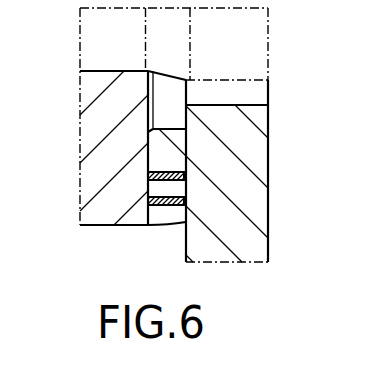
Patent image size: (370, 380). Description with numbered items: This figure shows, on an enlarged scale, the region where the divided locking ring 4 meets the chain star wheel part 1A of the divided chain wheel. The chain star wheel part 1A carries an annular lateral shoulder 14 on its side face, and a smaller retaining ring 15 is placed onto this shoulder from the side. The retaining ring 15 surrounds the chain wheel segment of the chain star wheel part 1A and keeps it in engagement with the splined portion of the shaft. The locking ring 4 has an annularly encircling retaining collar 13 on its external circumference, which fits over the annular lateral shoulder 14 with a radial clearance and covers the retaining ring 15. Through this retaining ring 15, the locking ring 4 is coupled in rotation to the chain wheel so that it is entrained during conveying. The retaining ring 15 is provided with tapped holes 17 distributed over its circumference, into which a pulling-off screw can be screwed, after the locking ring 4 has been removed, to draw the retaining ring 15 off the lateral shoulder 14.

The locking ring 4 is at (87, 146).
The chain star wheel part 1A is at (255, 207).
The annular lateral shoulder 14 is at (169, 167).
The tapped holes 17 is at (178, 190).
The retaining collar 13 is at (162, 218).
The retaining ring 15 is at (158, 208).